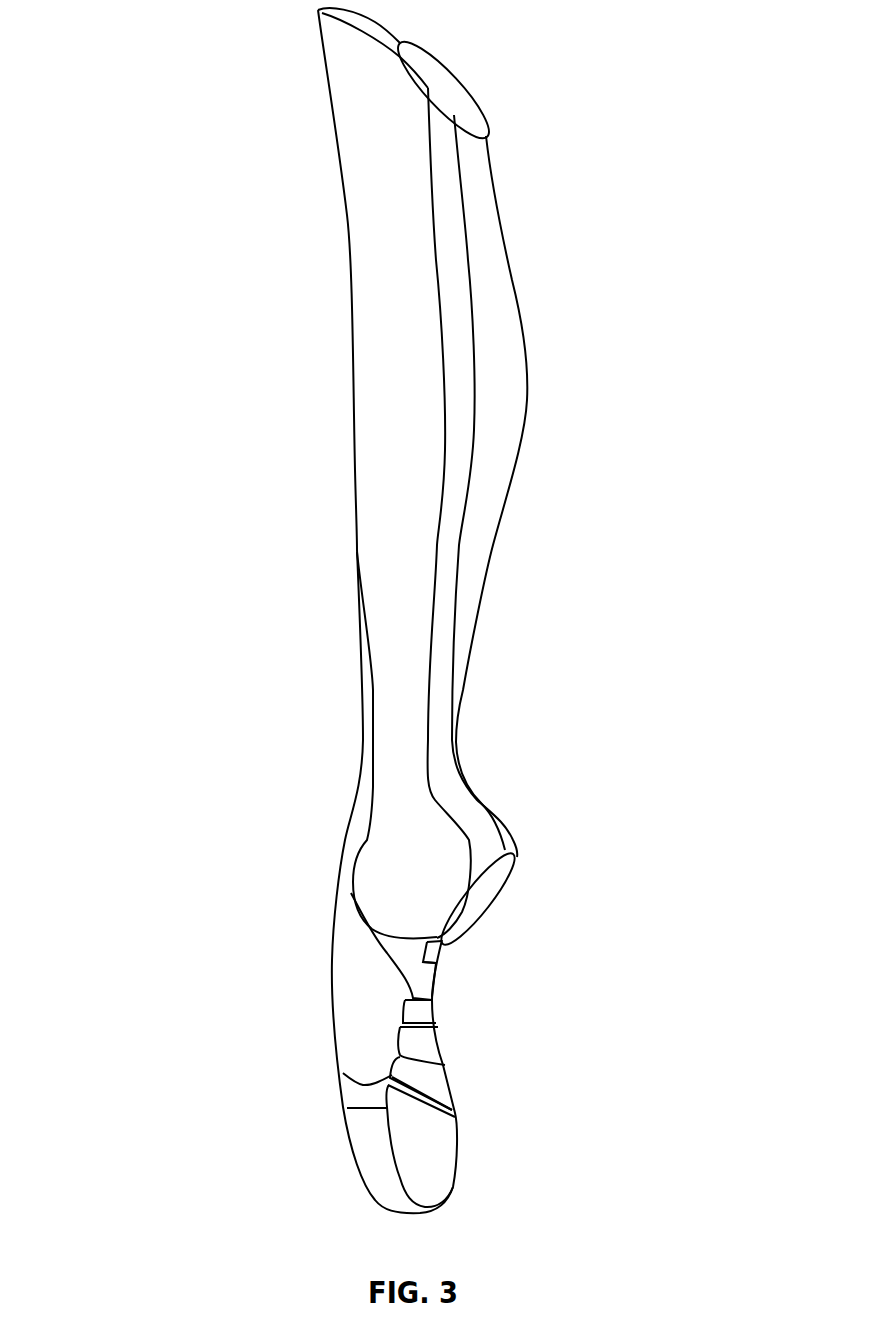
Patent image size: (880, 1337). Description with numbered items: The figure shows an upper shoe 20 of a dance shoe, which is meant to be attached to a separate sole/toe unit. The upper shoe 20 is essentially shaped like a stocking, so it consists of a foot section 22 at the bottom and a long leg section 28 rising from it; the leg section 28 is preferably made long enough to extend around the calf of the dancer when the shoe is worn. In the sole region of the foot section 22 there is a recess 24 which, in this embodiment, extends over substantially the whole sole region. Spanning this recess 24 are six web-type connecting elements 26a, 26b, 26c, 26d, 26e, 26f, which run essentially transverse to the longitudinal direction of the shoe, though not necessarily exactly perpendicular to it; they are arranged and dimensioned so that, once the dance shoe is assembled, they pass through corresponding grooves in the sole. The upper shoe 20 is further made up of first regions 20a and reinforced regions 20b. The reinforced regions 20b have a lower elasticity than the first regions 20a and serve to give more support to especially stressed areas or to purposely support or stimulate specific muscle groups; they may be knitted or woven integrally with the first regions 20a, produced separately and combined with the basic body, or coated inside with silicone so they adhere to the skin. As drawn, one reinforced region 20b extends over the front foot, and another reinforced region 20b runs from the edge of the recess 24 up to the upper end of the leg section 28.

The upper shoe 20 is at (619, 224).
The first regions 20a is at (387, 505).
The reinforced regions 20b is at (365, 890).
The foot section 22 is at (358, 990).
The recess 24 is at (435, 1137).
The web-type connecting element 26a is at (448, 1100).
The web-type connecting element 26b is at (445, 1062).
The web-type connecting element 26c is at (437, 1027).
The web-type connecting element 26d is at (435, 1002).
The web-type connecting element 26e is at (437, 963).
The web-type connecting element 26f is at (440, 938).
The leg section 28 is at (390, 385).